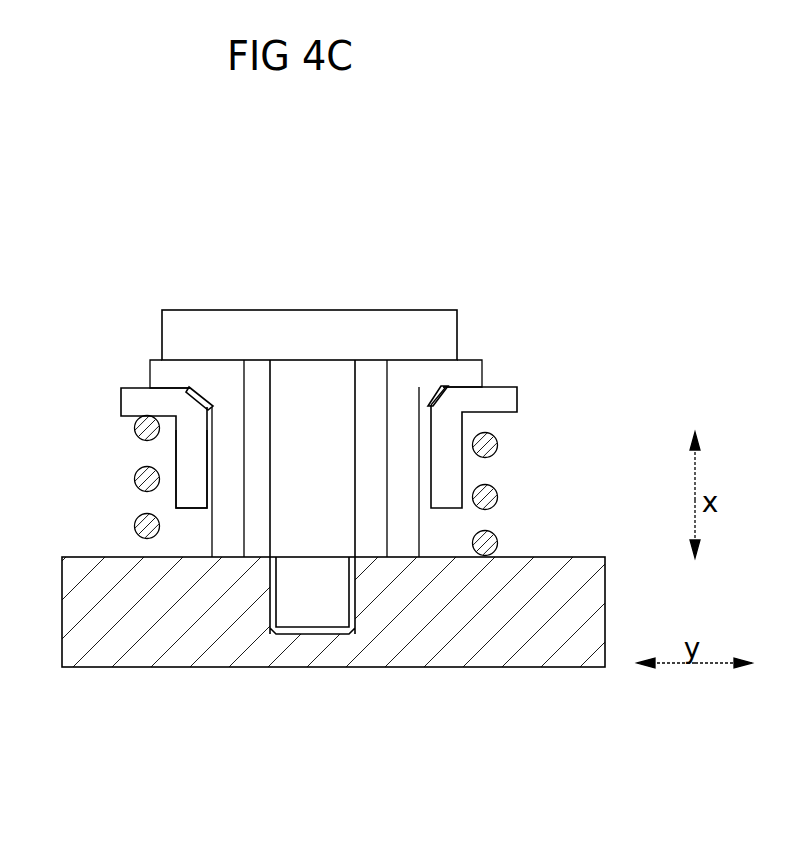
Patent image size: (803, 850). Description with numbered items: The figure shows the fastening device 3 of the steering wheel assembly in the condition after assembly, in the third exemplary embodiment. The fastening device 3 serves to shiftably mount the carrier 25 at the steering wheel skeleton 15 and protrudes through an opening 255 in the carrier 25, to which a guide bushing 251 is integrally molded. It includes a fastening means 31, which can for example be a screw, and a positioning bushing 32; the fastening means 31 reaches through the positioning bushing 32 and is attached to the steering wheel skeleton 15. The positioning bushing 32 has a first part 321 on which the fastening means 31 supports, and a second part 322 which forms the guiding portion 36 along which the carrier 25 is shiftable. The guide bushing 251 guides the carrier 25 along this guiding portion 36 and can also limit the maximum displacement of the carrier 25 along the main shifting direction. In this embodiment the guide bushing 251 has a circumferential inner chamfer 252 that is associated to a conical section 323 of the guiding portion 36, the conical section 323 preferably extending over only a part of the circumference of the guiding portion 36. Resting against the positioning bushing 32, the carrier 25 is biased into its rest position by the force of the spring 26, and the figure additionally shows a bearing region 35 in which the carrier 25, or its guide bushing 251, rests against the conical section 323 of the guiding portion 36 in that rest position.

The fastening device 3 is at (131, 262).
The steering wheel skeleton 15 is at (512, 653).
The carrier 25 is at (163, 375).
The guide bushing 251 is at (193, 453).
The circumferential inner chamfer 252 is at (445, 384).
The opening 255 is at (430, 405).
The spring 26 is at (135, 523).
The fastening means 31 is at (309, 285).
The positioning bushing 32 is at (301, 433).
The first part 321 is at (470, 372).
The second part 322 is at (410, 492).
The conical section 323 is at (202, 409).
The bearing region 35 is at (206, 371).
The guiding portion 36 is at (422, 418).